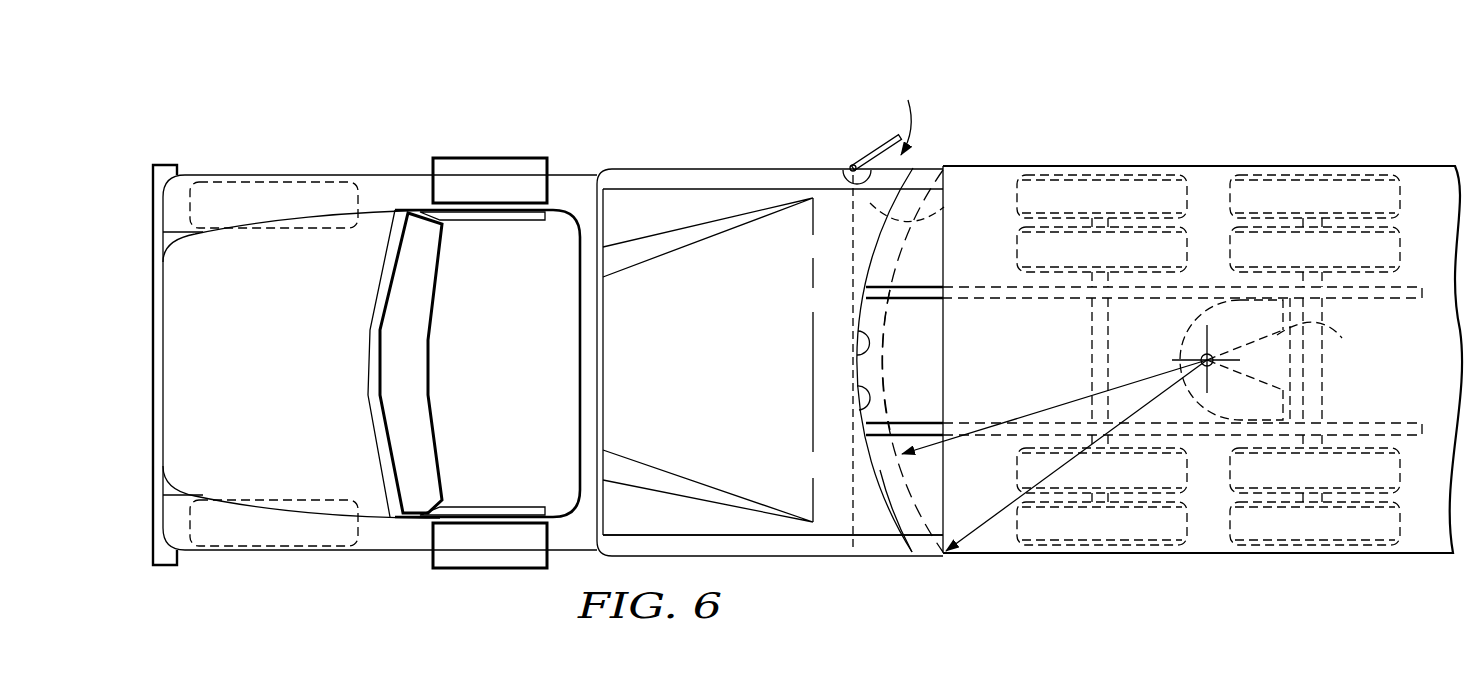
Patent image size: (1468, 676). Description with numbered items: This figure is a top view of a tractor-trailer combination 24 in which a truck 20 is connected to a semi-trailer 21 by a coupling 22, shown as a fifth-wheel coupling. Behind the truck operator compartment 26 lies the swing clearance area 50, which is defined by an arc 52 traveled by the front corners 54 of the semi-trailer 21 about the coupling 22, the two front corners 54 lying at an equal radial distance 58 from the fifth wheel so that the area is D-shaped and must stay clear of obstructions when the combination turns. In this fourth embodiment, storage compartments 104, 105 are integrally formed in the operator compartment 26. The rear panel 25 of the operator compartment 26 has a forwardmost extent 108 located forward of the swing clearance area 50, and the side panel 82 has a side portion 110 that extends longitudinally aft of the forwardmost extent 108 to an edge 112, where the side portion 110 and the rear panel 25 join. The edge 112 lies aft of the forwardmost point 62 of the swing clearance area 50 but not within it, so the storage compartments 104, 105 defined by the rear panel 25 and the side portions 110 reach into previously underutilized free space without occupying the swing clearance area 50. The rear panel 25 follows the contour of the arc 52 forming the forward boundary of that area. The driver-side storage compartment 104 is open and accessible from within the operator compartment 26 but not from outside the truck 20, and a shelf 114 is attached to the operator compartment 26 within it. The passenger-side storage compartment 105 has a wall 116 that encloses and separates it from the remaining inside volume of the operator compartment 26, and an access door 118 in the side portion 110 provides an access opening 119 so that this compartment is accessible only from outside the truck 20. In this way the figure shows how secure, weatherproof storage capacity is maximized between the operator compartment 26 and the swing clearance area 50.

The truck 20 is at (470, 112).
The semi-trailer 21 is at (1210, 166).
The coupling 22 is at (1343, 338).
The tractor-trailer combination 24 is at (891, 318).
The rear panel 25 is at (858, 390).
The operator compartment 26 is at (725, 372).
The swing clearance area 50 is at (916, 343).
The arc 52 is at (893, 265).
The front corners 54 is at (948, 168).
The radial distance 58 is at (1068, 403).
The forwardmost point 62 is at (884, 352).
The side panel 82 is at (714, 169).
The storage compartment 104 is at (867, 503).
The storage compartment 105 is at (945, 208).
The forwardmost extent 108 is at (856, 330).
The side portion 110 is at (845, 169).
The edge 112 is at (918, 170).
The shelf 114 is at (850, 520).
The wall 116 is at (853, 232).
The access door 118 is at (873, 147).
The access opening 119 is at (914, 109).